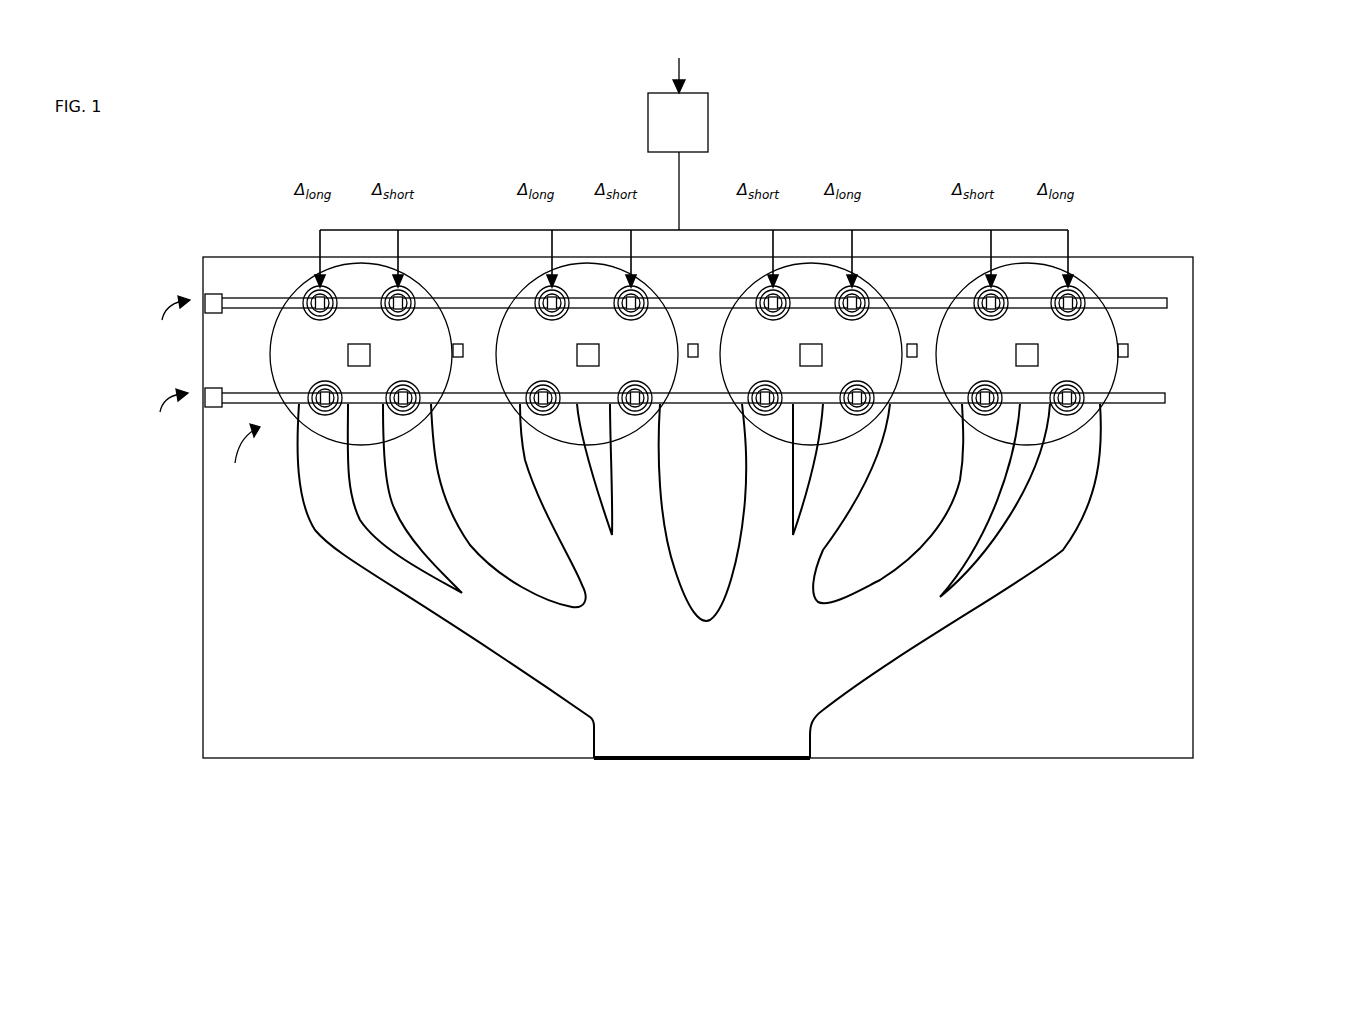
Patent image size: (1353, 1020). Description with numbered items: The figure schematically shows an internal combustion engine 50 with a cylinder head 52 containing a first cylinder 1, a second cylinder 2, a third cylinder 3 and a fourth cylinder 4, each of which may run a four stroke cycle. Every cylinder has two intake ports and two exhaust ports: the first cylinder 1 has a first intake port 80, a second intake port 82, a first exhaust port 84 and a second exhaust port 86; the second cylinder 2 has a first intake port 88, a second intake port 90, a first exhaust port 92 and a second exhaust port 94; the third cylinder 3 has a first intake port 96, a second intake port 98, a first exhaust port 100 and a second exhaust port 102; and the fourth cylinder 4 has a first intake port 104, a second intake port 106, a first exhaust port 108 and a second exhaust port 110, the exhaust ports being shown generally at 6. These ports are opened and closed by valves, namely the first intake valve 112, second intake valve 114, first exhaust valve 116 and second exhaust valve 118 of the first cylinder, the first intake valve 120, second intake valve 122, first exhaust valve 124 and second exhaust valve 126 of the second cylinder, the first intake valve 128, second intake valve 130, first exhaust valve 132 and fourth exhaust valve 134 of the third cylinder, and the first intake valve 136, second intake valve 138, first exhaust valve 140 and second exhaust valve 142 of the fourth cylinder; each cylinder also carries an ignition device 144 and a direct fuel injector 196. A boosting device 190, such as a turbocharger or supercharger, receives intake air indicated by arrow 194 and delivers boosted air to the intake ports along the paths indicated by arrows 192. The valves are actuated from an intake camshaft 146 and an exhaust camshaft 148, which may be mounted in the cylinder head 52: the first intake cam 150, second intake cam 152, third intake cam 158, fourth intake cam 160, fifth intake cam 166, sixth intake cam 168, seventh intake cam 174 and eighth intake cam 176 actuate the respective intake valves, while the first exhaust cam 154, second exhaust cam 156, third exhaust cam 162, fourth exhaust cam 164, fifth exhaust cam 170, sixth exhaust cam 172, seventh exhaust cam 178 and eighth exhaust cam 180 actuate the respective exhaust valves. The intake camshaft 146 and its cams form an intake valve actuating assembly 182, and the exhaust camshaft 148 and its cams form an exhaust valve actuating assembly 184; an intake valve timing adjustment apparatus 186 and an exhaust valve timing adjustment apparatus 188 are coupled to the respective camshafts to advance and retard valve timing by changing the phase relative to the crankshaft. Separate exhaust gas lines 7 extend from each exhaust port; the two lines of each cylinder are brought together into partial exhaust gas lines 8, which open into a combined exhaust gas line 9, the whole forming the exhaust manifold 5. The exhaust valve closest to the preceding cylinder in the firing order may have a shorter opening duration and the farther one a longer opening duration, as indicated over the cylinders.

The first cylinder 1 is at (296, 293).
The second cylinder 2 is at (518, 292).
The third cylinder 3 is at (745, 292).
The fourth cylinder 4 is at (962, 292).
The exhaust manifold 5 is at (755, 800).
The exhaust ports 6 is at (246, 455).
The exhaust gas lines 7 is at (329, 512).
The partial exhaust gas lines 8 is at (479, 617).
The combined exhaust gas line 9 is at (687, 697).
The internal combustion engine 50 is at (1284, 360).
The cylinder head 52 is at (225, 256).
The first intake port 80 is at (318, 322).
The second intake port 82 is at (400, 322).
The first exhaust port 84 is at (312, 384).
The second exhaust port 86 is at (413, 382).
The first intake port 88 is at (550, 322).
The second intake port 90 is at (625, 321).
The first exhaust port 92 is at (530, 385).
The second exhaust port 94 is at (650, 386).
The first intake port 96 is at (770, 322).
The second intake port 98 is at (850, 322).
The first exhaust port 100 is at (754, 383).
The second exhaust port 102 is at (868, 383).
The first intake port 104 is at (991, 322).
The second intake port 106 is at (1068, 322).
The first exhaust port 108 is at (974, 383).
The second exhaust port 110 is at (1079, 383).
The first intake valve 112 is at (306, 316).
The second intake valve 114 is at (380, 310).
The first exhaust valve 116 is at (341, 392).
The second exhaust valve 118 is at (394, 381).
The first intake valve 120 is at (539, 317).
The second intake valve 122 is at (643, 317).
The first exhaust valve 124 is at (560, 390).
The second exhaust valve 126 is at (627, 381).
The first intake valve 128 is at (759, 316).
The second intake valve 130 is at (864, 317).
The first exhaust valve 132 is at (782, 390).
The fourth exhaust valve 134 is at (851, 380).
The first intake valve 136 is at (978, 316).
The second intake valve 138 is at (1081, 317).
The first exhaust valve 140 is at (1002, 389).
The second exhaust valve 142 is at (1063, 380).
The ignition device 144 is at (348, 352).
The intake camshaft 146 is at (230, 298).
The exhaust camshaft 148 is at (232, 393).
The first intake cam 150 is at (333, 296).
The second intake cam 152 is at (410, 314).
The first exhaust cam 154 is at (339, 411).
The second exhaust cam 156 is at (341, 405).
The third intake cam 158 is at (565, 290).
The fourth intake cam 160 is at (614, 302).
The third exhaust cam 162 is at (550, 380).
The fourth exhaust cam 164 is at (640, 380).
The fifth intake cam 166 is at (786, 289).
The sixth intake cam 168 is at (865, 289).
The fifth exhaust cam 170 is at (749, 409).
The sixth exhaust cam 172 is at (873, 408).
The seventh intake cam 174 is at (1004, 289).
The eighth intake cam 176 is at (1082, 290).
The seventh exhaust cam 178 is at (970, 409).
The eighth exhaust cam 180 is at (1086, 402).
The intake valve actuating assembly 182 is at (170, 319).
The exhaust valve actuating assembly 184 is at (168, 410).
The intake valve timing adjustment apparatus 186 is at (207, 293).
The exhaust valve timing adjustment apparatus 188 is at (207, 388).
The boosting device 190 is at (666, 131).
The arrows representing intake air flow 192 is at (681, 186).
The arrow representing intake air flow to boosting device 194 is at (681, 66).
The direct fuel injector 196 is at (459, 345).